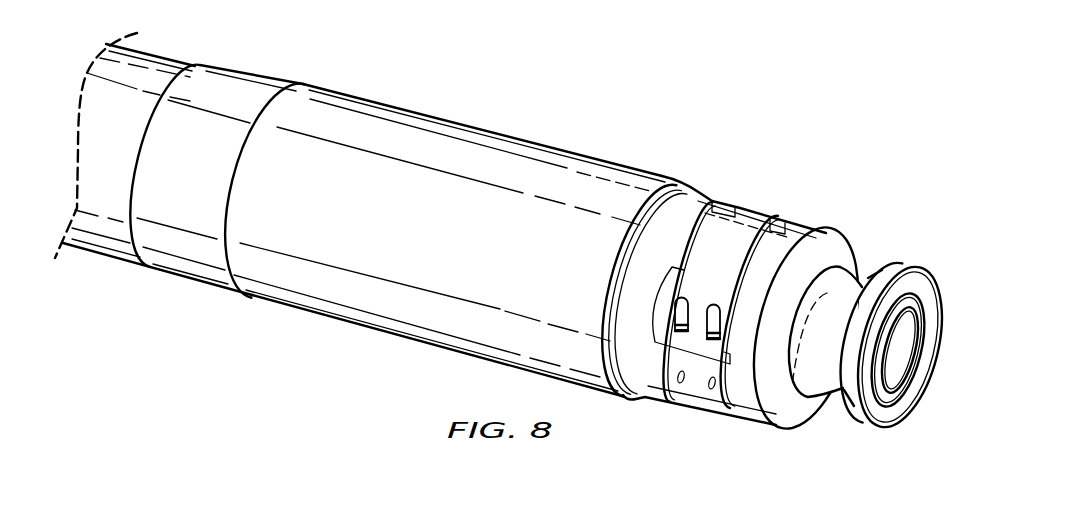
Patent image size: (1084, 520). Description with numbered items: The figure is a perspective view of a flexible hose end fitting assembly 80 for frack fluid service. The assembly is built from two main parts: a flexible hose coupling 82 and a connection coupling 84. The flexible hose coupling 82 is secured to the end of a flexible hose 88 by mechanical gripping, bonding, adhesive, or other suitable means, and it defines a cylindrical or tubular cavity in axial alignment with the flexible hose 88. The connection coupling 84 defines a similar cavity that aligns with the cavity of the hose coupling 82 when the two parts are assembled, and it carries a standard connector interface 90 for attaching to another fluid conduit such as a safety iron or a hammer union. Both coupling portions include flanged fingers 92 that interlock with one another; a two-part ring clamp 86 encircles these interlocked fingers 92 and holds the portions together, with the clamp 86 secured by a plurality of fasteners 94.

The flexible hose end fitting assembly 80 is at (660, 27).
The flexible hose coupling 82 is at (324, 316).
The connection coupling 84 is at (842, 234).
The two-part ring clamp 86 is at (720, 414).
The flexible hose 88 is at (146, 50).
The standard connector interface 90 is at (888, 433).
The flanged fingers 92 is at (713, 198).
The fasteners 94 is at (711, 344).